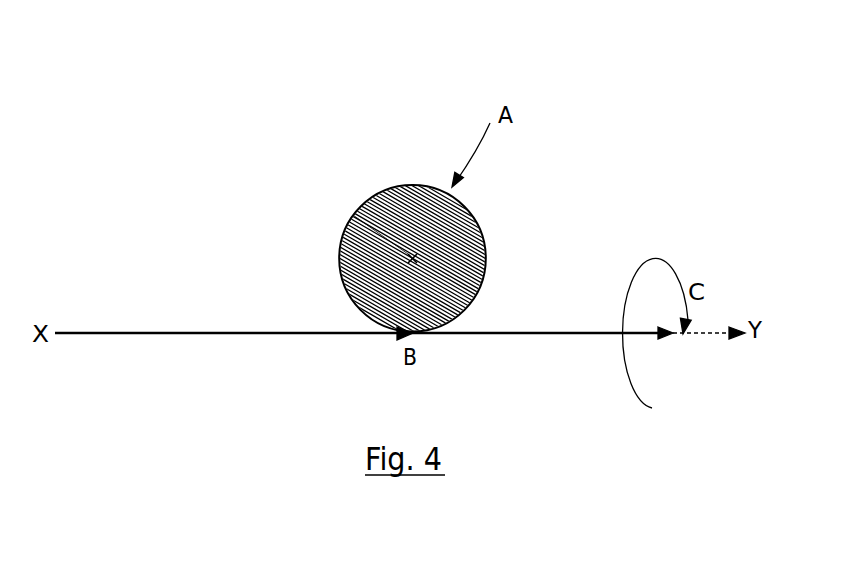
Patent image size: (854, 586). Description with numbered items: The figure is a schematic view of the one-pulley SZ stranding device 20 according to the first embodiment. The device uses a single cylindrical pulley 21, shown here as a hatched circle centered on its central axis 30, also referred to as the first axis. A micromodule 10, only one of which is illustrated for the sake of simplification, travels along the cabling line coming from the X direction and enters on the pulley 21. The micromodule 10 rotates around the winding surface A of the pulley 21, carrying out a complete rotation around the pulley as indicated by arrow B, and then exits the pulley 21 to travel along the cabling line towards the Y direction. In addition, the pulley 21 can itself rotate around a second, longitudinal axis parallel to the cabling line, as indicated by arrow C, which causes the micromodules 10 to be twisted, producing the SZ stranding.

The micromodule 10 is at (113, 334).
The SZ stranding device 20 is at (180, 125).
The pulley 21 is at (353, 214).
The central axis 30 is at (411, 277).